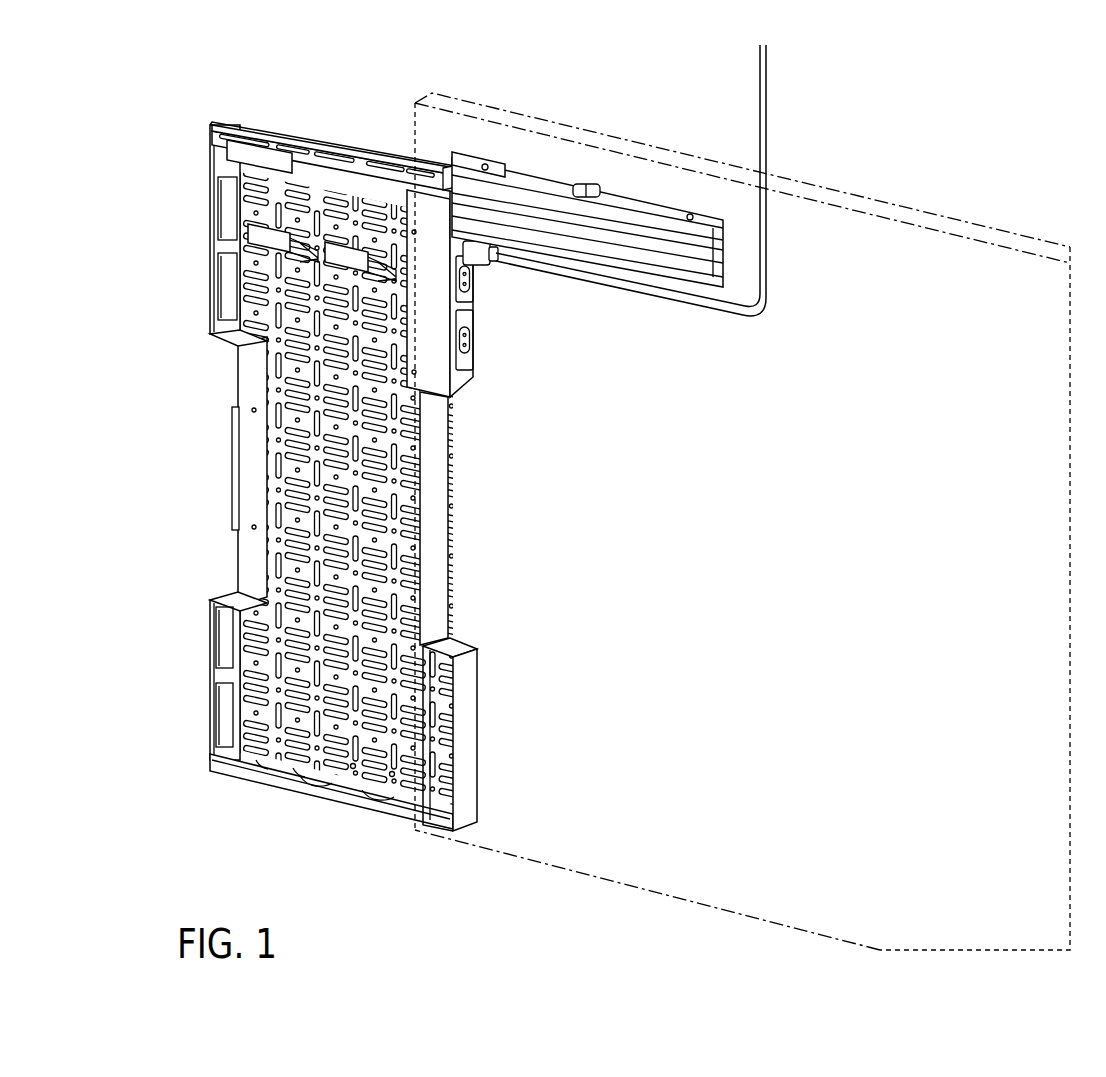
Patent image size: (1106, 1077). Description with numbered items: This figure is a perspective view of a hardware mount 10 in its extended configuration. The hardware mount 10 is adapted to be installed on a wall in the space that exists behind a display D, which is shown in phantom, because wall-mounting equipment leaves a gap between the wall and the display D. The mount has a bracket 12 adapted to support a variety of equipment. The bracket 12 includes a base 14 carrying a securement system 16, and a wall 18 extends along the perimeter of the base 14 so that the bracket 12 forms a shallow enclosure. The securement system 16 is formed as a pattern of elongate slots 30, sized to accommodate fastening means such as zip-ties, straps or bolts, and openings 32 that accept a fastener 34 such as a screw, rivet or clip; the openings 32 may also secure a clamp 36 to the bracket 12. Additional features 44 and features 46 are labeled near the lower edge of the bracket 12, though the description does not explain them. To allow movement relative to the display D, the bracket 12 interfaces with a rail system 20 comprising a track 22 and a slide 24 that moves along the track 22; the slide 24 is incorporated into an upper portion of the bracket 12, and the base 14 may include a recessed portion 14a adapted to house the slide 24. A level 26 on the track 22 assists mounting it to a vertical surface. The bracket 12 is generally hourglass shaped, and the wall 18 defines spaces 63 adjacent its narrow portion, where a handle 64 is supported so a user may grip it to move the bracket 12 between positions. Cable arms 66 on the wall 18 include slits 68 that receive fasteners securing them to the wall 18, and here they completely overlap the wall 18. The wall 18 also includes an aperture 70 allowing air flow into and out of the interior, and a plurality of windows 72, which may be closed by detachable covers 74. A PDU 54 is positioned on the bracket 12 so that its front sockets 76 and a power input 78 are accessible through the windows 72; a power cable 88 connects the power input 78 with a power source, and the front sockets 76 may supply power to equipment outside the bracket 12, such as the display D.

The hardware mount 10 is at (603, 610).
The bracket 12 is at (203, 152).
The base 14 is at (250, 284).
The recessed portion 14a is at (290, 165).
The securement system 16 is at (262, 357).
The wall 18 is at (246, 548).
The rail system 20 is at (493, 147).
The track 22 is at (645, 206).
The slide 24 is at (479, 170).
The level 26 is at (586, 185).
The slots 30 is at (420, 456).
The openings 32 is at (416, 498).
The fastener 34 is at (388, 276).
The clamp 36 is at (346, 220).
The slot 44 is at (300, 768).
The hole 46 is at (392, 777).
The PDU 54 is at (430, 228).
The spaces 63 is at (192, 505).
The handle 64 is at (236, 406).
The cable arm 66 is at (221, 125).
The slits 68 is at (240, 127).
The aperture 70 is at (372, 792).
The windows 72 is at (219, 707).
The covers 74 is at (466, 762).
The front sockets 76 is at (474, 342).
The power input 78 is at (476, 241).
The power cable 88 is at (764, 108).
The display D is at (960, 258).